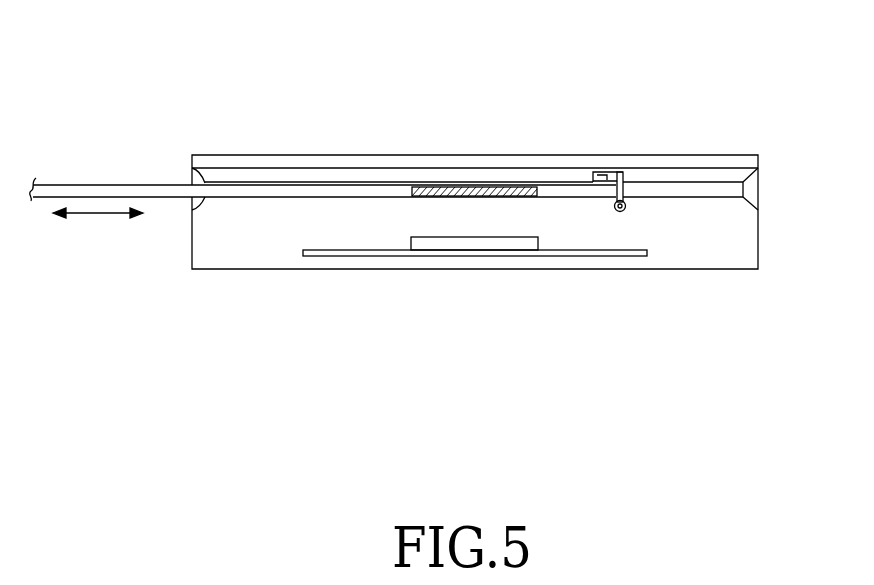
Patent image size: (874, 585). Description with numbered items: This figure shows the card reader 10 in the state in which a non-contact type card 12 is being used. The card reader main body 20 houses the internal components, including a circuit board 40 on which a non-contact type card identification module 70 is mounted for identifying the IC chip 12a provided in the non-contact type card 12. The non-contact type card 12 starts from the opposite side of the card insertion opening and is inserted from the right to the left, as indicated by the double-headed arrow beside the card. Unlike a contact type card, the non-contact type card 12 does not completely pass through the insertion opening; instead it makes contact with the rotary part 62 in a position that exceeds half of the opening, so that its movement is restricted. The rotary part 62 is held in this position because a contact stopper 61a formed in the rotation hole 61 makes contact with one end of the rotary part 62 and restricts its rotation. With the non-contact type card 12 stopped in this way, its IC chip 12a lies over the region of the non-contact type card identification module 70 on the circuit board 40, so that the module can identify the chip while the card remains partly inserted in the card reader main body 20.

The card reader 10 is at (793, 72).
The non-contact type card 12 is at (120, 187).
The IC chip 12a is at (431, 187).
The card reader main body 20 is at (276, 269).
The circuit board 40 is at (337, 256).
The rotation hole 61 is at (592, 177).
The contact stopper 61a is at (625, 172).
The rotary part 62 is at (618, 172).
The non-contact type card identification module 70 is at (462, 244).